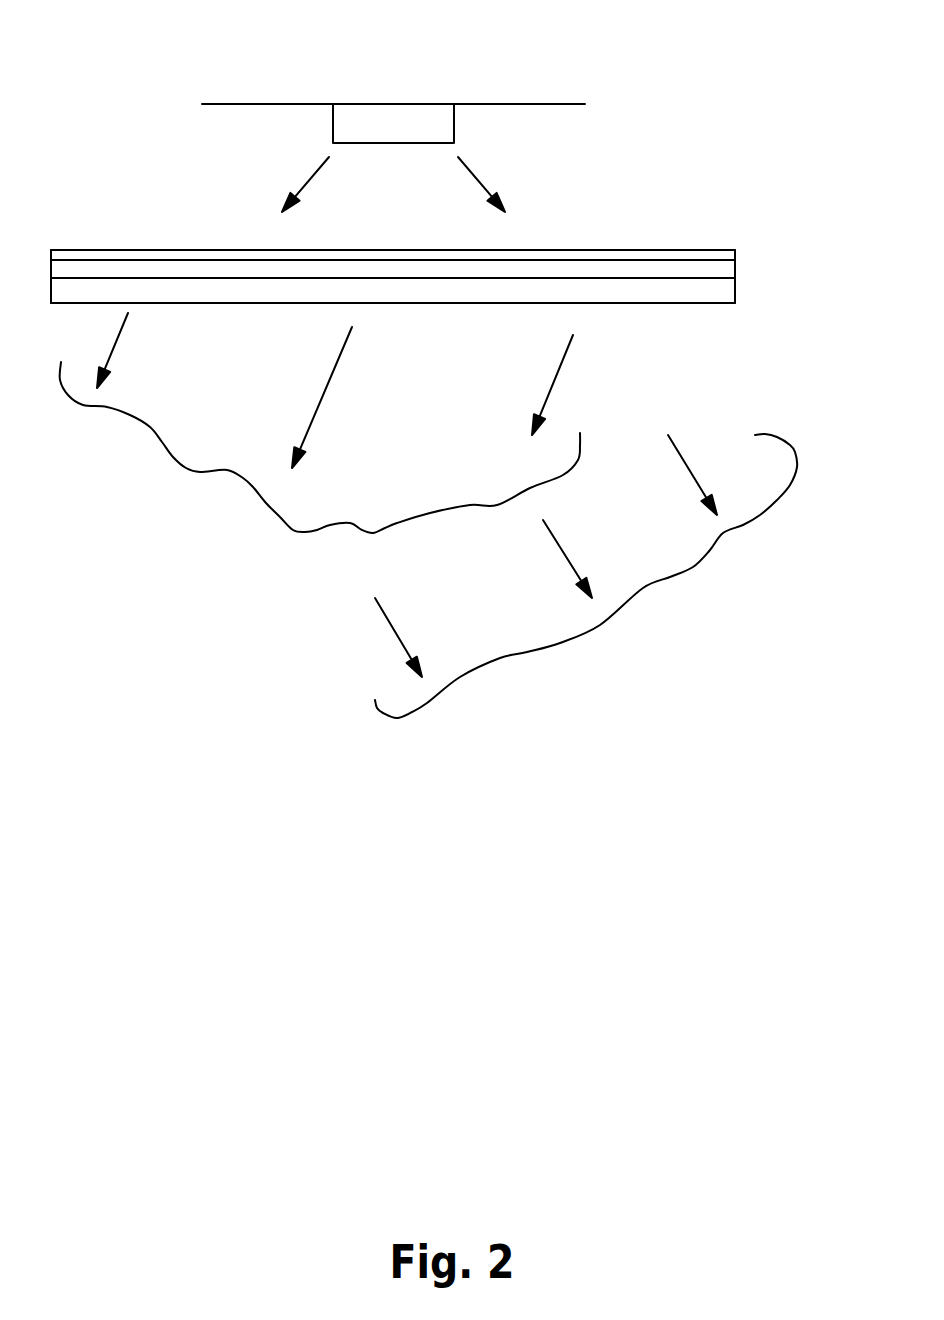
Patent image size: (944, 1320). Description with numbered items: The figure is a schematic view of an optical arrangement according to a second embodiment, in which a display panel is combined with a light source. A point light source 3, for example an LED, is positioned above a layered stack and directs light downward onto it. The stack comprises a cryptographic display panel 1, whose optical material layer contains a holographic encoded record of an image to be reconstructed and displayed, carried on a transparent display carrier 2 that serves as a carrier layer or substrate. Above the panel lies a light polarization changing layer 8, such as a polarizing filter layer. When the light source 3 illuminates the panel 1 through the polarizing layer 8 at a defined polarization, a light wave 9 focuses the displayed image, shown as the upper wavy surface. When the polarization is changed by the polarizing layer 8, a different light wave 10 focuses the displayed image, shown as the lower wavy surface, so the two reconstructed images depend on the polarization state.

The point light source 3 is at (393, 77).
The cryptographic display panel 1 is at (449, 253).
The light polarization changing layer 8 is at (399, 216).
The transparent display carrier 2 is at (401, 313).
The light wave 9 is at (319, 447).
The light wave 10 is at (586, 576).